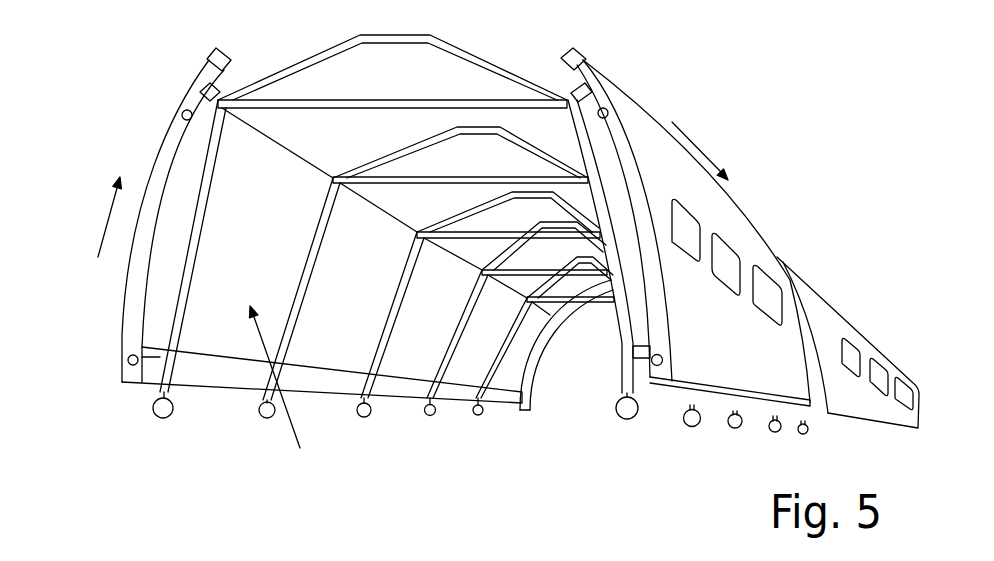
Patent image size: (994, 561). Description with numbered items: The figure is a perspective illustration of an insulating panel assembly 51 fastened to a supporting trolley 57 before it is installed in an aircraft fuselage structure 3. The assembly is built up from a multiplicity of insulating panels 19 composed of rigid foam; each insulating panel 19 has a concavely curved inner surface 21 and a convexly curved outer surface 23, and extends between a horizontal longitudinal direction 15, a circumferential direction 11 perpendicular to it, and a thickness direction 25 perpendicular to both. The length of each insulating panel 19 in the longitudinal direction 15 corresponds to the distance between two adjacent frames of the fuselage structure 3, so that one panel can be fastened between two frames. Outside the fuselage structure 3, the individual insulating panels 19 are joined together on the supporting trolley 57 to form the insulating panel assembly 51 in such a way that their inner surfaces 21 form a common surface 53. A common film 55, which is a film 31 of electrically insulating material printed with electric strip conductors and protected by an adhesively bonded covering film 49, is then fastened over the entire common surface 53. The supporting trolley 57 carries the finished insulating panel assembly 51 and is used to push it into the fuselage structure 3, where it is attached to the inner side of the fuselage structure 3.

The fuselage structure 3 is at (838, 327).
The circumferential direction 11 is at (106, 224).
The horizontal longitudinal direction 15 is at (698, 147).
The insulating panel 19 is at (758, 350).
The inner surface 21 is at (204, 349).
The outer surface 23 is at (111, 320).
The thickness direction 25 is at (609, 55).
The film 31 is at (274, 185).
The covering film 49 is at (290, 394).
The insulating panel assembly 51 is at (764, 215).
The common surface 53 is at (377, 291).
The common film 55 is at (445, 318).
The supporting trolley 57 is at (478, 107).